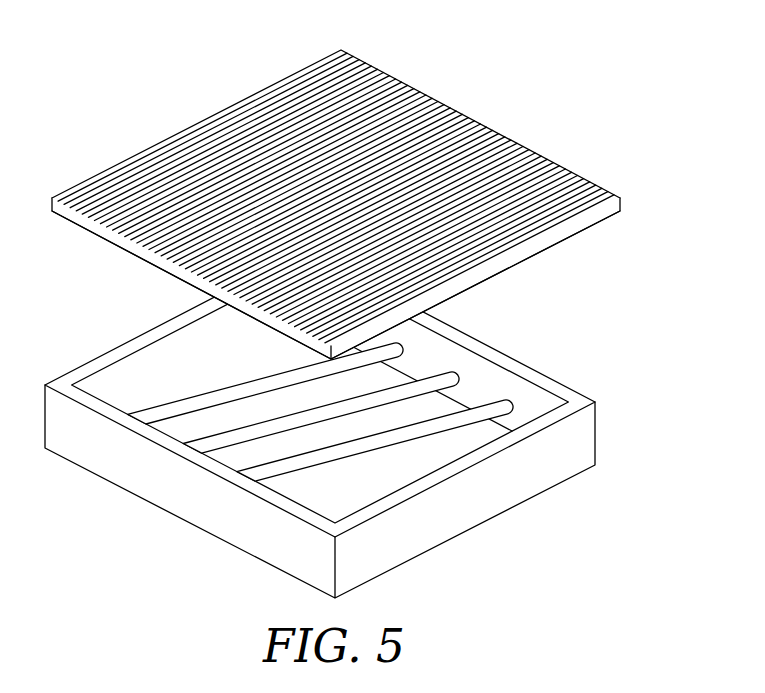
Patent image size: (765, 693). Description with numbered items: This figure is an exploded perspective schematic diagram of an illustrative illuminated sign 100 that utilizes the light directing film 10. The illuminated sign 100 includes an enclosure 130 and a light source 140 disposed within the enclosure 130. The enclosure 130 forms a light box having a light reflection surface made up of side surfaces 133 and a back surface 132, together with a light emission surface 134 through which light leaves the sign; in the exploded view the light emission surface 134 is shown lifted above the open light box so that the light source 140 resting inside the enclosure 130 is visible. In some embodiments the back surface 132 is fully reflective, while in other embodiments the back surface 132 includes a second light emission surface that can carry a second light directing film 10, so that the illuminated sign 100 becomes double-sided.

The illuminated sign 100 is at (365, 308).
The light directing film 10 is at (336, 204).
The light emission surface 134 is at (122, 165).
The enclosure 130 is at (602, 428).
The back surface 132 is at (422, 436).
The side surfaces 133 is at (442, 362).
The light source 140 is at (497, 406).